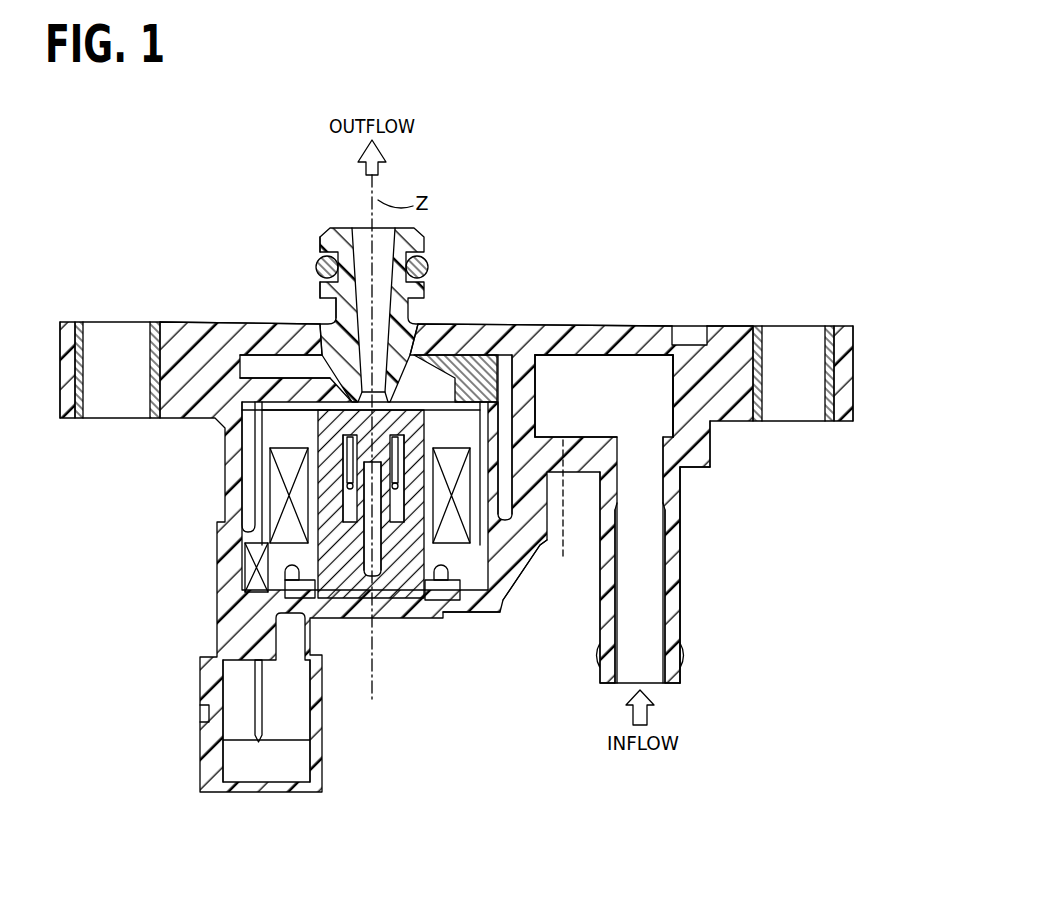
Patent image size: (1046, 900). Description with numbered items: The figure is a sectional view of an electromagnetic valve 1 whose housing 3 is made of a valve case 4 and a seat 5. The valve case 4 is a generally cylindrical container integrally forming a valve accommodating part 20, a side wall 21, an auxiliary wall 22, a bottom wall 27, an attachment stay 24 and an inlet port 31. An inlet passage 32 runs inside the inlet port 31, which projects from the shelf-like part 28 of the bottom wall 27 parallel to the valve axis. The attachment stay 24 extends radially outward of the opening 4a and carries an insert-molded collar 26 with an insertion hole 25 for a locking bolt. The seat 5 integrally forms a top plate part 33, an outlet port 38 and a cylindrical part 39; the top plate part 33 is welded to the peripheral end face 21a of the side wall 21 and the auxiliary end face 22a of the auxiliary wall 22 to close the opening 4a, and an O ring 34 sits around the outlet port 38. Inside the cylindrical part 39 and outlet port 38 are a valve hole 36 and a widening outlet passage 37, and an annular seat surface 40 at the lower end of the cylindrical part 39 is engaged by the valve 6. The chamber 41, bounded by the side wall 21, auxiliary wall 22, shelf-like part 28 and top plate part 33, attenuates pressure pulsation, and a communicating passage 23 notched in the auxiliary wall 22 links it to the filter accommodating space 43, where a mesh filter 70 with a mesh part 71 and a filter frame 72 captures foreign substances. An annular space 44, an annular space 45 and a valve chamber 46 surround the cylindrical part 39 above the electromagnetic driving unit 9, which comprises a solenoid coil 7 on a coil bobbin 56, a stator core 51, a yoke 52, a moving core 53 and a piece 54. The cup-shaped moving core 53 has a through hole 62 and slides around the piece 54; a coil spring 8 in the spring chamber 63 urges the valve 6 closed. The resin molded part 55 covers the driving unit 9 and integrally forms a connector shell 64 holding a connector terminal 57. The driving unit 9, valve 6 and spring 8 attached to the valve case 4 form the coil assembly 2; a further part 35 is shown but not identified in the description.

The electromagnetic valve 1 is at (139, 208).
The coil assembly 2 is at (172, 494).
The housing 3 is at (230, 232).
The valve case 4 is at (184, 340).
The opening 4a is at (672, 345).
The seat 5 is at (244, 336).
The valve 6 is at (453, 365).
The solenoid coil 7 is at (262, 572).
The coil spring 8 is at (446, 579).
The electromagnetic driving unit 9 is at (192, 571).
The valve accommodating part 20 is at (483, 332).
The side wall 21 is at (688, 382).
The peripheral end face 21a is at (700, 335).
The auxiliary wall 22 is at (546, 358).
The auxiliary end face 22a is at (530, 362).
The communicating passage 23 is at (567, 510).
The attachment stay 24 is at (77, 420).
The insertion hole 25 is at (86, 343).
The collar 26 is at (80, 322).
The bottom wall 27 is at (640, 596).
The shelf-like part 28 is at (680, 541).
The inlet port 31 is at (670, 626).
The inlet passage 32 is at (637, 570).
The top plate part 33 is at (650, 350).
The O ring 34 is at (331, 258).
The pin 35 is at (500, 368).
The valve hole 36 is at (350, 303).
The outlet passage 37 is at (338, 292).
The outlet port 38 is at (325, 243).
The cylindrical part 39 is at (300, 345).
The seat surface 40 is at (240, 500).
The chamber 41 is at (631, 362).
The filter accommodating space 43 is at (485, 583).
The annular space 44 is at (258, 372).
The annular space 45 is at (260, 456).
The valve chamber 46 is at (255, 435).
The stator core 51 is at (418, 600).
The yoke 52 is at (437, 600).
The moving core 53 is at (380, 600).
The piece 54 is at (365, 600).
The resin molded part 55 is at (485, 582).
The coil bobbin 56 is at (255, 592).
The connector terminal 57 is at (253, 699).
The through hole 62 is at (416, 355).
The spring chamber 63 is at (240, 527).
The connector shell 64 is at (220, 767).
The mesh filter 70 is at (572, 214).
The mesh part 71 is at (612, 385).
The filter frame 72 is at (582, 378).